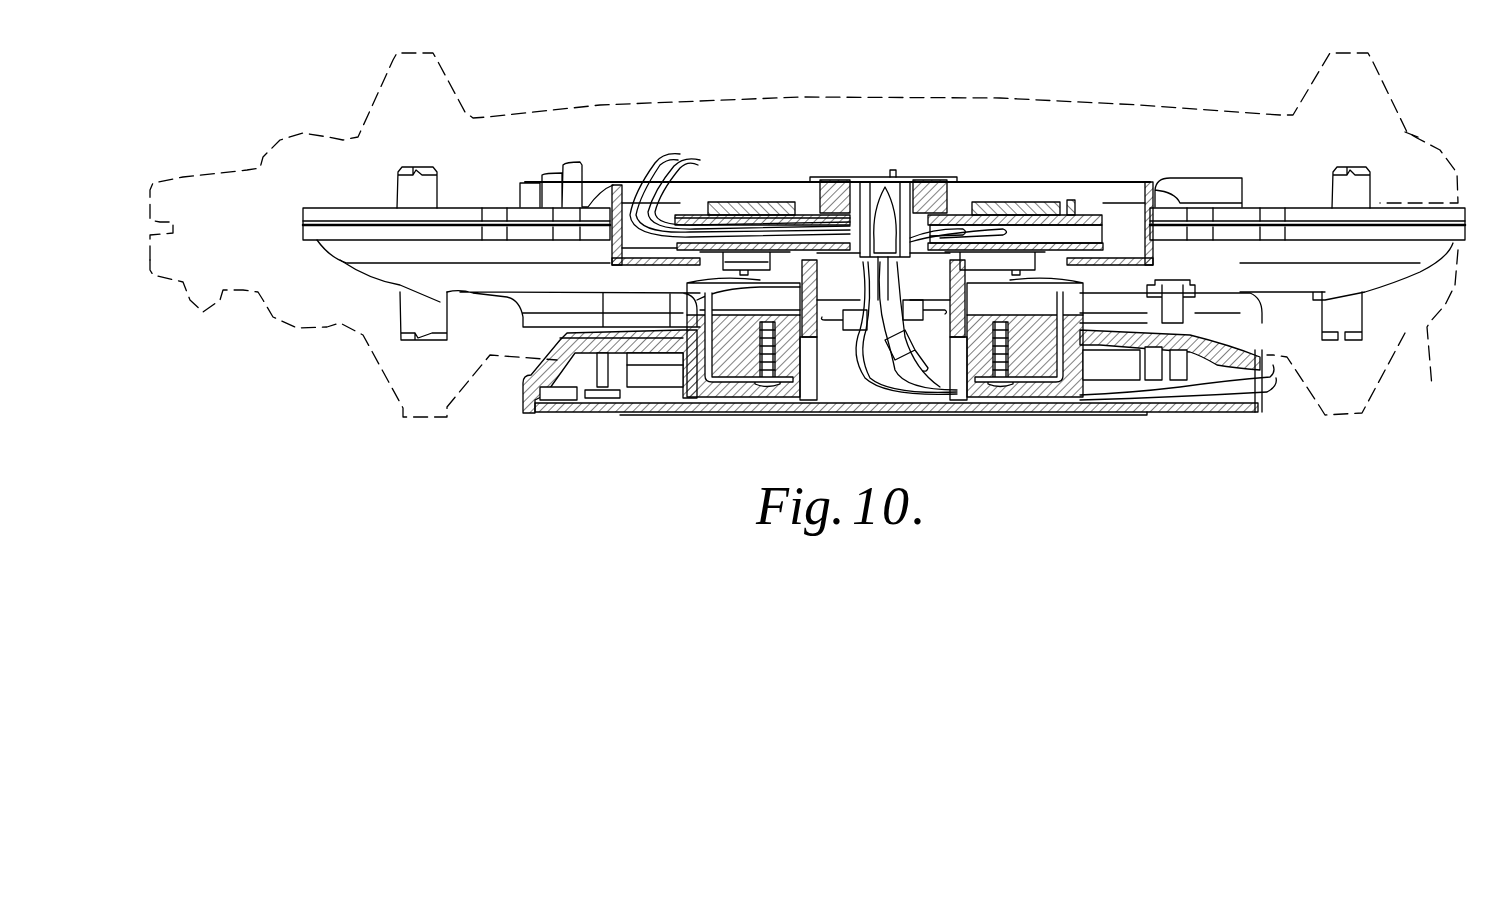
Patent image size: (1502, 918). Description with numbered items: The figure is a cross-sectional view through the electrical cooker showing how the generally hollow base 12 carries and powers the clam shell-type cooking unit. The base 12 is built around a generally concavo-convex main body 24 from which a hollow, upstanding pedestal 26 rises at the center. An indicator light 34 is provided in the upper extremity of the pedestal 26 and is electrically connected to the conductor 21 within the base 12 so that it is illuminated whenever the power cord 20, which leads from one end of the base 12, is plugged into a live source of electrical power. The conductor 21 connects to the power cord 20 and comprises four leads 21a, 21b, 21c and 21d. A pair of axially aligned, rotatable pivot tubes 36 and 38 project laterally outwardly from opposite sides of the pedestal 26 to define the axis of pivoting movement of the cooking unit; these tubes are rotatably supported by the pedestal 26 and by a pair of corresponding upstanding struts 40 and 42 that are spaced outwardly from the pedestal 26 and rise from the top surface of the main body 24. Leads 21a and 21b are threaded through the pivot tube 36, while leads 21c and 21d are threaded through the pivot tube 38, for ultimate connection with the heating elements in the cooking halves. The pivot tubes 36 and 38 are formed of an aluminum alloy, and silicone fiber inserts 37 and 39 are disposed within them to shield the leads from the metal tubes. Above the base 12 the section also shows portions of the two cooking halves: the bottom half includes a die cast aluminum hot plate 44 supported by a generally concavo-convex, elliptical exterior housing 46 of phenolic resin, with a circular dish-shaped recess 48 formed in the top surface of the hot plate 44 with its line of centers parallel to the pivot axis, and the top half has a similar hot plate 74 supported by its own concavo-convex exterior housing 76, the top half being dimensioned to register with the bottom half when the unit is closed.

The base 12 is at (520, 405).
The power cord 20 is at (1240, 380).
The conductor 21 is at (853, 292).
The lead 21a is at (660, 183).
The lead 21b is at (673, 167).
The lead 21c is at (963, 230).
The lead 21d is at (1003, 228).
The main body 24 is at (652, 338).
The pedestal 26 is at (837, 193).
The indicator light 34 is at (882, 178).
The pivot tube 36 is at (720, 215).
The silicone fiber insert 37 is at (757, 222).
The pivot tube 38 is at (1048, 215).
The silicone fiber insert 39 is at (1097, 218).
The strut 40 is at (1063, 292).
The strut 42 is at (708, 295).
The hot plate 44 is at (313, 232).
The exterior housing 46 is at (427, 277).
The recess 48 is at (1385, 255).
The hot plate 74 is at (448, 213).
The exterior housing 76 is at (1422, 137).